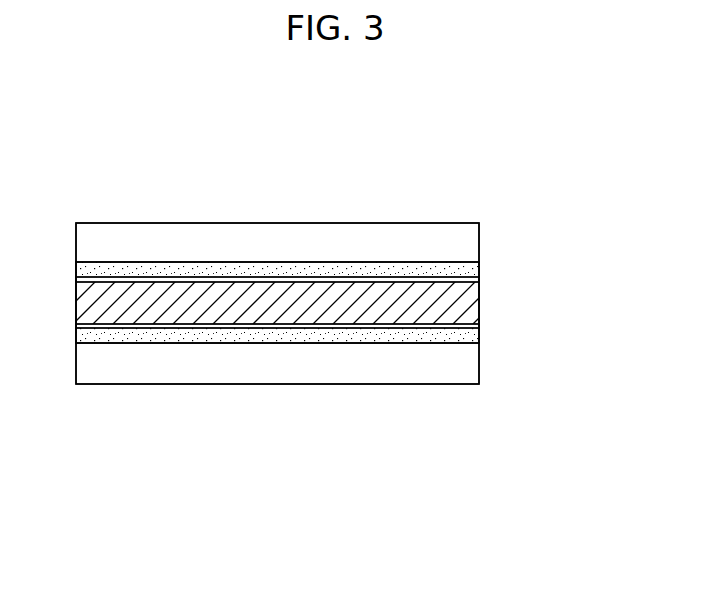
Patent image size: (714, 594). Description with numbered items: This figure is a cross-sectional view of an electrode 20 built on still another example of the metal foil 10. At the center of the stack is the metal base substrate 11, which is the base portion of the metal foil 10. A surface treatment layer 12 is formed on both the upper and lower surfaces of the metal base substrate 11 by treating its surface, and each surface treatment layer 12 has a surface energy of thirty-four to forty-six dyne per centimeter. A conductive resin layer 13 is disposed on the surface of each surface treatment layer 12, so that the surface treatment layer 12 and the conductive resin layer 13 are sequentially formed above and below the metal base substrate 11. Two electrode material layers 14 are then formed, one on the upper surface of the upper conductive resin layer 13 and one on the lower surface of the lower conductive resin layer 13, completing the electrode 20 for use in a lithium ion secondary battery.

The metal foil 10 is at (556, 248).
The metal base substrate 11 is at (468, 307).
The surface treatment layer 12 is at (475, 280).
The conductive resin layer 13 is at (447, 268).
The electrode material layer 14 is at (442, 237).
The electrode 20 is at (272, 212).